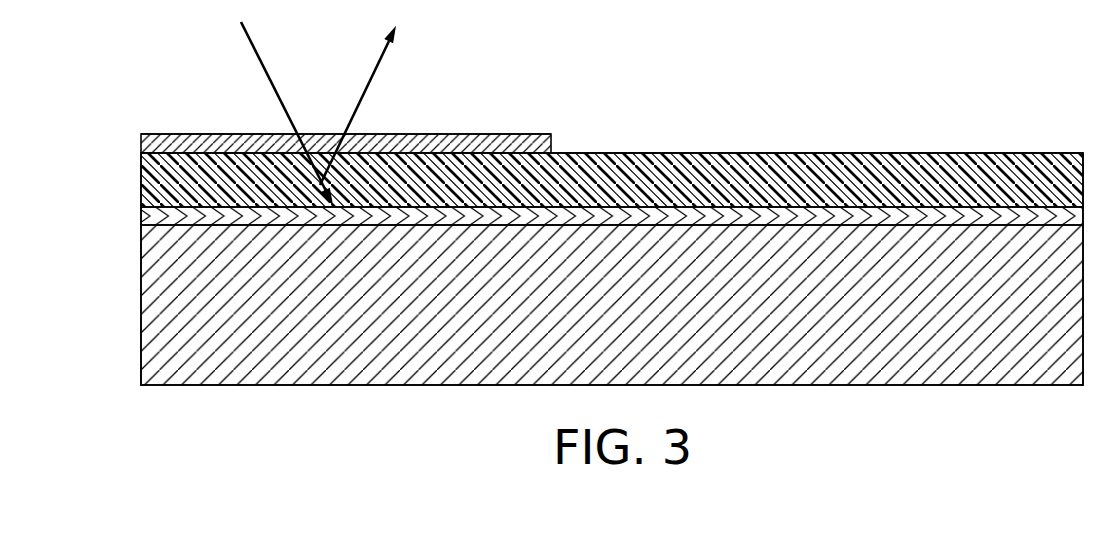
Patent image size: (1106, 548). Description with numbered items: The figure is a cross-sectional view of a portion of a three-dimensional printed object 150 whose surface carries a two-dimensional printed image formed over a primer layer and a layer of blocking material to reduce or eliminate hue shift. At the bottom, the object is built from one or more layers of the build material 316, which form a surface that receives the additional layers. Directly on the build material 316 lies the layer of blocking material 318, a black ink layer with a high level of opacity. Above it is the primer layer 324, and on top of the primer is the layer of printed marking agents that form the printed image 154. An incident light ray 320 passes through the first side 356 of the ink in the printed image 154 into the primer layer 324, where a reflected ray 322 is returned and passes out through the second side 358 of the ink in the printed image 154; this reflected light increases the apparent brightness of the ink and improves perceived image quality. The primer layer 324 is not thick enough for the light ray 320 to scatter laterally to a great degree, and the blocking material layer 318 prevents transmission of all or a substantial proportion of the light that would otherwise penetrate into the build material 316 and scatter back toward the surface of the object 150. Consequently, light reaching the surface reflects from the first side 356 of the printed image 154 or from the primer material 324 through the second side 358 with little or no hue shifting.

The three-dimensional printed object 150 is at (728, 95).
The printed image layer 154 is at (141, 143).
The build material layer 316 is at (141, 310).
The blocking material layer 318 is at (141, 216).
The light ray 320 is at (272, 85).
The reflected ray 322 is at (357, 97).
The primer layer 324 is at (141, 178).
The first side of the printed image 356 is at (512, 134).
The second side of the printed image 358 is at (535, 161).